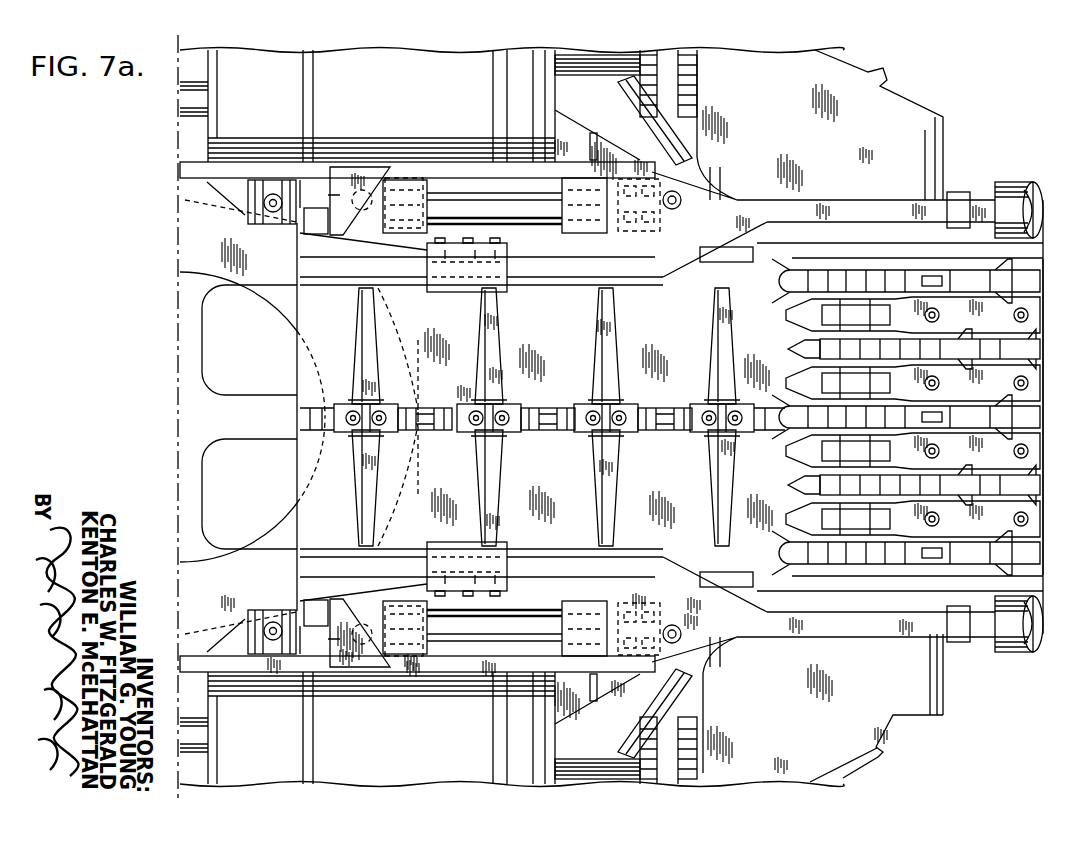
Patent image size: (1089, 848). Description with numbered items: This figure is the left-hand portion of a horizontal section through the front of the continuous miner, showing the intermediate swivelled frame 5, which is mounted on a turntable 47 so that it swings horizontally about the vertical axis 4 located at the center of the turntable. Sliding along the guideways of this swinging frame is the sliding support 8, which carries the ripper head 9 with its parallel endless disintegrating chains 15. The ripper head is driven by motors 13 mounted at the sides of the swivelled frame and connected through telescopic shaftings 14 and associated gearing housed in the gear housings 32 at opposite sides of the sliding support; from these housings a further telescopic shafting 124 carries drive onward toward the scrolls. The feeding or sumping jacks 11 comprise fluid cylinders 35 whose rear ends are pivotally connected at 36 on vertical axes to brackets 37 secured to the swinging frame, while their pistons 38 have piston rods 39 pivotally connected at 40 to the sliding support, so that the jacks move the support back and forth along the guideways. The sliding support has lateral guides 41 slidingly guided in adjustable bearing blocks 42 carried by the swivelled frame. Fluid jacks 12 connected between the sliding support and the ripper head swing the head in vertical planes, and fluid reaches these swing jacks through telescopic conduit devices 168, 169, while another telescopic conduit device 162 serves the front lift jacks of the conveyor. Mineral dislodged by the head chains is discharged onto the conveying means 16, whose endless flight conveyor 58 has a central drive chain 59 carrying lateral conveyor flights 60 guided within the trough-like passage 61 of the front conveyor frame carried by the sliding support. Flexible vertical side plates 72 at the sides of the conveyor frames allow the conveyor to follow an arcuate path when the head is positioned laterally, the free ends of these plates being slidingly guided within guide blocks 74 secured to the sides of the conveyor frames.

The vertical axis 4 is at (178, 422).
The intermediate swivelled frame 5 is at (188, 173).
The sliding support 8 is at (836, 213).
The ripper head 9 is at (990, 397).
The fluid jacks 11 is at (460, 190).
The fluid jacks 12 is at (1030, 205).
The motors 13 is at (414, 78).
The telescopic shaftings 14 is at (605, 62).
The endless disintegrating chains 15 is at (988, 420).
The conveying means 16 is at (353, 350).
The gear housings 32 is at (913, 143).
The fluid cylinders 35 is at (498, 275).
The pivotal connection 36 is at (375, 172).
The brackets 37 is at (298, 237).
The pistons 38 is at (405, 185).
The piston rods 39 is at (505, 168).
The pivotal connection 40 is at (676, 210).
The lateral guides 41 is at (312, 195).
The adjustable bearing blocks 42 is at (273, 194).
The turntable 47 is at (195, 245).
The endless flight conveyor 58 is at (625, 443).
The central drive chain 59 is at (538, 433).
The conveyor flights 60 is at (372, 500).
The trough-like passage 61 is at (640, 578).
The flexible vertical side plates 72 is at (380, 296).
The guide blocks 74 is at (468, 285).
The telescopic shafting 124 is at (662, 150).
The telescopic conduit device 162 is at (615, 648).
The telescopic conduit device 168 is at (600, 220).
The telescopic conduit device 169 is at (600, 612).